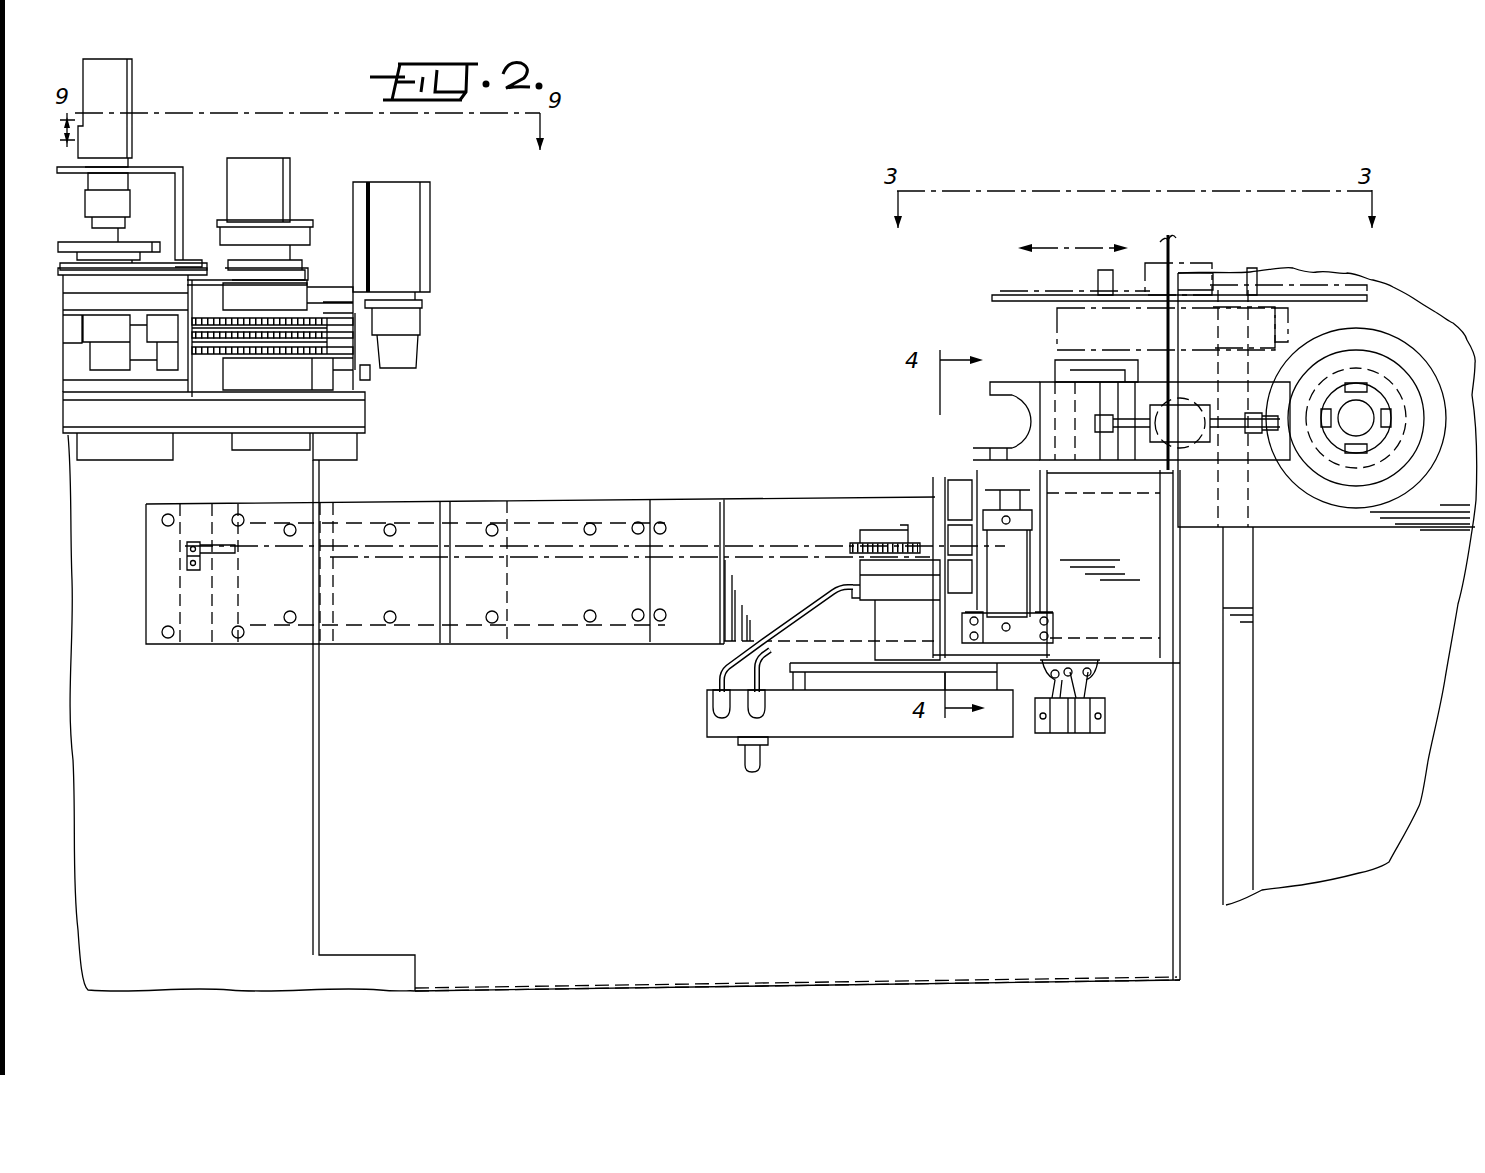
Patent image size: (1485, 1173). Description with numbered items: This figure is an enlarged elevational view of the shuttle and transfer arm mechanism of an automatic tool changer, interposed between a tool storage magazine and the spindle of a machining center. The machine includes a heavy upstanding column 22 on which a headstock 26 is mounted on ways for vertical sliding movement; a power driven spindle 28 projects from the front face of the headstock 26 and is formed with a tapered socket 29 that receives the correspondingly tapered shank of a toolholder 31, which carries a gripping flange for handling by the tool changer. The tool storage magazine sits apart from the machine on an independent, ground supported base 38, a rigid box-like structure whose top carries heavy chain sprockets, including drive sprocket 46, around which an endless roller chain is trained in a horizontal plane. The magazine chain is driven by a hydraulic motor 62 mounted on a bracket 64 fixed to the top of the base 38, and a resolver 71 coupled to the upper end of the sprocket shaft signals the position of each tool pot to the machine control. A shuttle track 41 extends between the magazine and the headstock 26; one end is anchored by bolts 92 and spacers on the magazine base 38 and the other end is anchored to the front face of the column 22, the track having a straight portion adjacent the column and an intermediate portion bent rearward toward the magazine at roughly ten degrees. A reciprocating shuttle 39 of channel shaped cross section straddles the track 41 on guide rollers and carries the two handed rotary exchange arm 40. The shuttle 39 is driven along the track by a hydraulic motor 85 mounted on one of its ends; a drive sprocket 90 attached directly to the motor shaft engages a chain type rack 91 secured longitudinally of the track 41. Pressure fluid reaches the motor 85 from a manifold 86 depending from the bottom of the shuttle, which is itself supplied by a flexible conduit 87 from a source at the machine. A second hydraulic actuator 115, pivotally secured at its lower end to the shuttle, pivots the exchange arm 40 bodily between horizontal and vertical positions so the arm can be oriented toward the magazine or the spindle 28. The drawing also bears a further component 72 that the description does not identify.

The column 22 is at (1357, 867).
The headstock 26 is at (1310, 524).
The spindle 28 is at (1374, 355).
The tapered socket 29 is at (1409, 387).
The toolholder 31 is at (428, 250).
The base 38 is at (320, 752).
The shuttle 39 is at (1130, 647).
The exchange arm 40 is at (1198, 455).
The shuttle track 41 is at (504, 648).
The drive sprocket 46 is at (242, 345).
The hydraulic motor 62 is at (132, 92).
The bracket 64 is at (155, 166).
The resolver 71 is at (270, 172).
The plate 72 is at (157, 240).
The hydraulic motor 85 is at (865, 614).
The manifold 86 is at (810, 737).
The flexible conduit 87 is at (742, 762).
The drive sprocket 90 is at (862, 543).
The chain type rack 91 is at (735, 545).
The bolts 92 is at (240, 640).
The second hydraulic actuator 115 is at (1027, 590).